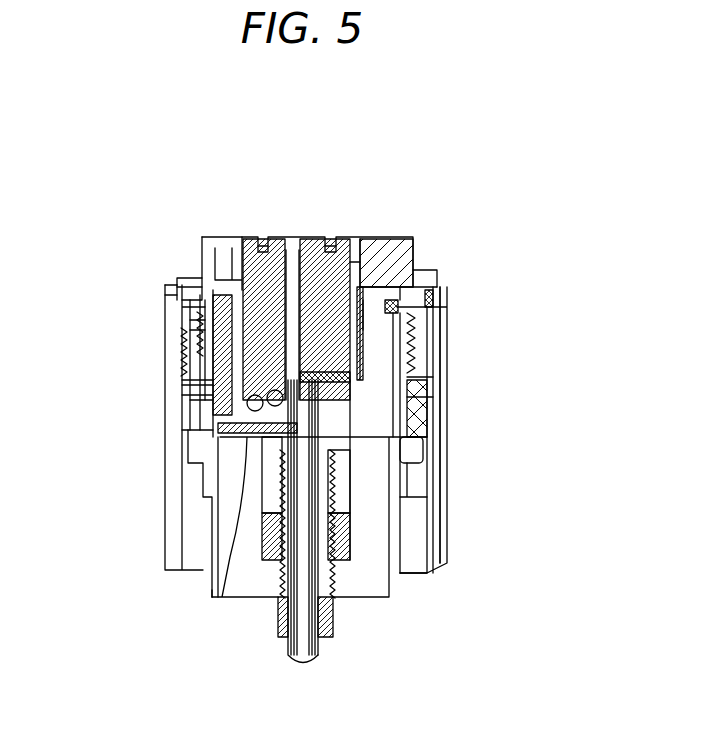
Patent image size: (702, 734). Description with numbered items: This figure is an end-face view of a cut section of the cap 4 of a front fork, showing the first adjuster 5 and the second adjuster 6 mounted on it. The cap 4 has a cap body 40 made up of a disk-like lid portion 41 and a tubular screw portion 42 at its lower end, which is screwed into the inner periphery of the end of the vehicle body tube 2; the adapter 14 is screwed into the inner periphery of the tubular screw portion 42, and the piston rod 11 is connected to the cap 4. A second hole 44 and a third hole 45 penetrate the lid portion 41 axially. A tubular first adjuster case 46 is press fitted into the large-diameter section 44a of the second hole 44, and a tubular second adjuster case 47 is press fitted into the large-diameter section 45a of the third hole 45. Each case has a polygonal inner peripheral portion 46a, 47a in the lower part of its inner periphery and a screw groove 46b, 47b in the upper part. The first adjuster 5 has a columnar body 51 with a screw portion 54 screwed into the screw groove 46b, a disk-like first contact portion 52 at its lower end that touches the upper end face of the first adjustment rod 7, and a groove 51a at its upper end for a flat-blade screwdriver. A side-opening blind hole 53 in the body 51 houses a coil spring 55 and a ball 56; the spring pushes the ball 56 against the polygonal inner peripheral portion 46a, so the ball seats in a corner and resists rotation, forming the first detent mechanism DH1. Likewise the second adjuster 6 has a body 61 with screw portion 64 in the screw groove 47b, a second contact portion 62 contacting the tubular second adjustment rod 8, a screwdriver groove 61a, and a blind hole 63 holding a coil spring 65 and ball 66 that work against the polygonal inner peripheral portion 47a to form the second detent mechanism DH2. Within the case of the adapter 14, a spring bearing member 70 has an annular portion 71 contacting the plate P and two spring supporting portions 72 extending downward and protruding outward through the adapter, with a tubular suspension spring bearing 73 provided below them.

The vehicle body tube 2 is at (447, 553).
The cap 4 is at (440, 272).
The first adjuster 5 is at (362, 262).
The second adjuster 6 is at (230, 257).
The first adjustment rod 7 is at (312, 662).
The second adjustment rod 8 is at (333, 610).
The piston rod 11 is at (277, 607).
The adapter 14 is at (443, 463).
The cap body 40 is at (216, 236).
The lid portion 41 is at (410, 240).
The tubular screw portion 42 is at (447, 352).
The second hole 44 is at (385, 237).
The large-diameter section 44a is at (413, 263).
The third hole 45 is at (277, 237).
The large-diameter section 45a is at (200, 293).
The first adjuster case 46 is at (432, 335).
The polygonal inner peripheral portion 46a is at (430, 328).
The screw groove 46b is at (440, 300).
The second adjuster case 47 is at (195, 350).
The polygonal inner peripheral portion 47a is at (200, 400).
The screw groove 47b is at (205, 325).
The body 51 is at (340, 237).
The groove 51a is at (327, 237).
The first contact portion 52 is at (422, 432).
The blind hole 53 is at (295, 390).
The screw portion 54 is at (293, 237).
The coil spring 55 is at (405, 360).
The ball 56 is at (369, 315).
The body 61 is at (268, 237).
The groove 61a is at (262, 239).
The second contact portion 62 is at (188, 433).
The blind hole 63 is at (203, 507).
The screw portion 64 is at (190, 380).
The coil spring 65 is at (180, 400).
The ball 66 is at (348, 468).
The spring bearing member 70 is at (190, 305).
The annular portion 71 is at (203, 335).
The spring supporting portions 72 is at (440, 500).
The suspension spring bearing 73 is at (420, 575).
The plate P is at (199, 287).
The first detent mechanism DH1 is at (422, 382).
The second detent mechanism DH2 is at (230, 597).